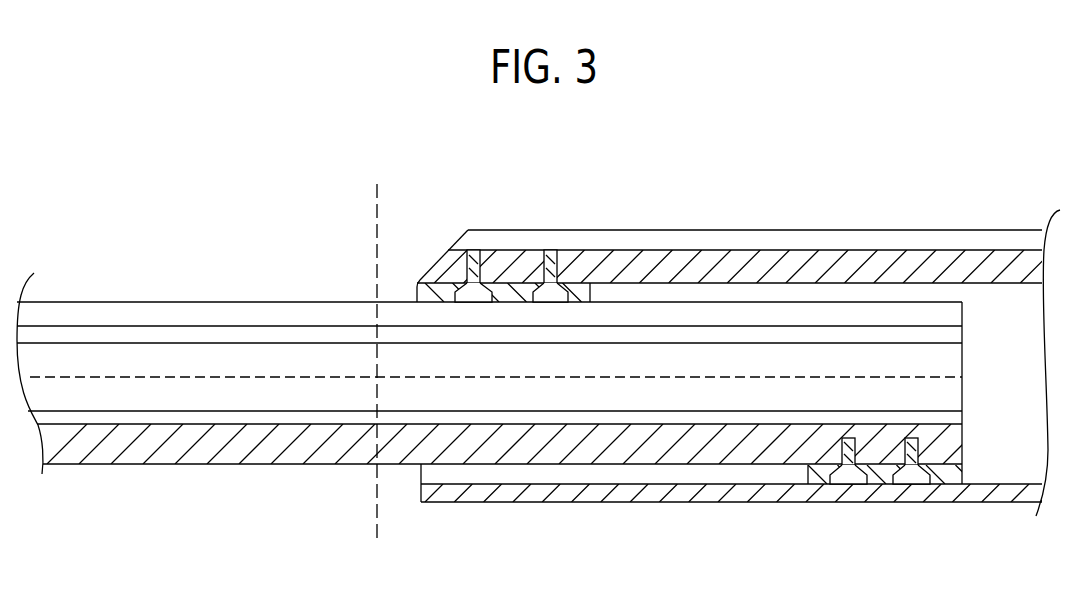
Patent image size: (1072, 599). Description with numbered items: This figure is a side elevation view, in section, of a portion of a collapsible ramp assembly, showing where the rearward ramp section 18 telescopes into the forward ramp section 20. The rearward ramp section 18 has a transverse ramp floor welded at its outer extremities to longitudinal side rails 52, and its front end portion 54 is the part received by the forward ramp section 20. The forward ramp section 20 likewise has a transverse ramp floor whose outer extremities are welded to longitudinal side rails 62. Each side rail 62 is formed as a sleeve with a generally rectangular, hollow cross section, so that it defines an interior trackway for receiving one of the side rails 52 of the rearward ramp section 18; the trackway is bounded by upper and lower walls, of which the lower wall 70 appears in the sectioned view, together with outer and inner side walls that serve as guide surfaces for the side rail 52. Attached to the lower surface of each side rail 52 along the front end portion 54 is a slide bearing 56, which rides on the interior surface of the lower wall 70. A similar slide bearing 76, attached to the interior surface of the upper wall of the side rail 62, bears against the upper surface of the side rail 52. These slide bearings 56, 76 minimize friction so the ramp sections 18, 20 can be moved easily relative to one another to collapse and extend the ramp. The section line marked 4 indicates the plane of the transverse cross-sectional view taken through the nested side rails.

The rearward ramp section 18 is at (222, 288).
The forward ramp section 20 is at (824, 204).
The side rail 52 is at (278, 448).
The front end portion 54 is at (948, 364).
The slide bearing 56 is at (968, 478).
The side rail 62 is at (700, 231).
The lower wall 70 is at (913, 502).
The slide bearing 76 is at (419, 292).
The section line 4- 4 is at (377, 184).